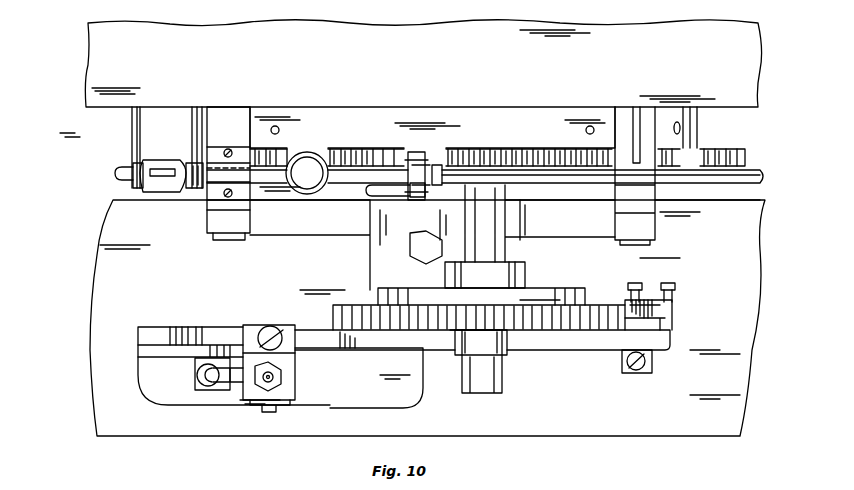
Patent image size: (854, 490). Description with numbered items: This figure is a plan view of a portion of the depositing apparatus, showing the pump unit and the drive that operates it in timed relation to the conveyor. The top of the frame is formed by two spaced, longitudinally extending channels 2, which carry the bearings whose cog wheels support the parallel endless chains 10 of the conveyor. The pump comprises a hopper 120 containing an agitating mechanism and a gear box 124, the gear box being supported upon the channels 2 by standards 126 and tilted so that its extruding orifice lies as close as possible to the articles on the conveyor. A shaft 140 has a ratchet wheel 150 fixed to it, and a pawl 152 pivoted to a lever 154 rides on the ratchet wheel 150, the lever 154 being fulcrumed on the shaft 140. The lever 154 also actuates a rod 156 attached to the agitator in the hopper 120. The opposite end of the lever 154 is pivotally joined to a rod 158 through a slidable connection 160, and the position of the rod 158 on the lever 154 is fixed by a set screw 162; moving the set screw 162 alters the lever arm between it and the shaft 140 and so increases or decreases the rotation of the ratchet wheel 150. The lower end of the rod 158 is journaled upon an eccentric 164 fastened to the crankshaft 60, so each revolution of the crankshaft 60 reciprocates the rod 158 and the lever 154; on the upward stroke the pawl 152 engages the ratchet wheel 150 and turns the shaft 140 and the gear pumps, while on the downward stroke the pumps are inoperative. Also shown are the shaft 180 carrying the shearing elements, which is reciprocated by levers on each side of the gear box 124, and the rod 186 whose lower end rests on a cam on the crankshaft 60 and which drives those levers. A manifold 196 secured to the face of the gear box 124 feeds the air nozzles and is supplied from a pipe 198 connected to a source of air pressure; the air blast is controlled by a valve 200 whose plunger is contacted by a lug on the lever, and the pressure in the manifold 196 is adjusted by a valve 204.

The channels 2 is at (93, 397).
The endless chains 10 is at (725, 157).
The crankshaft 60 is at (176, 328).
The hopper 120 is at (88, 77).
The gear box 124 is at (328, 120).
The standards 126 is at (300, 228).
The shaft 140 is at (486, 390).
The ratchet wheel 150 is at (575, 345).
The pawl 152 is at (657, 315).
The lever 154 is at (550, 342).
The rod 156 is at (637, 373).
The rod 158 is at (227, 378).
The slidable connection 160 is at (255, 333).
The set screw 162 is at (279, 330).
The eccentric 164 is at (170, 352).
The shaft 180 is at (192, 122).
The rod 186 is at (370, 190).
The manifold 196 is at (133, 140).
The pipe 198 is at (750, 177).
The valve 200 is at (310, 171).
The valve 204 is at (150, 178).